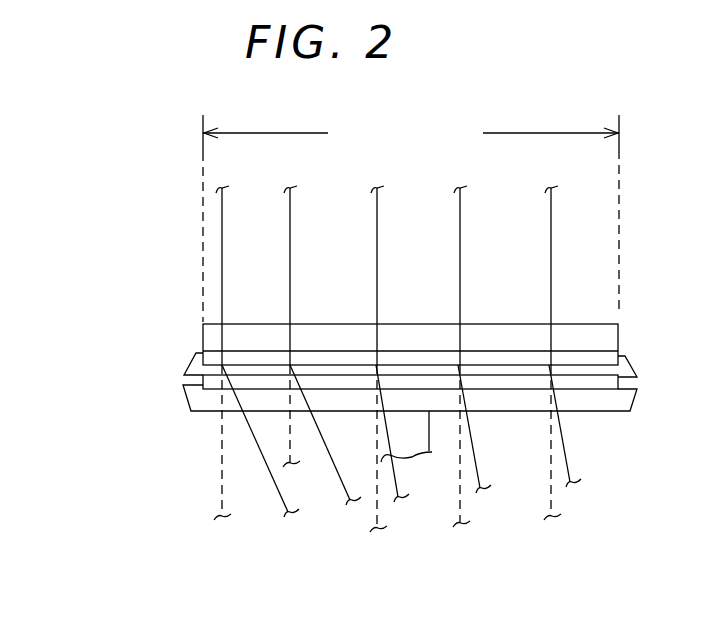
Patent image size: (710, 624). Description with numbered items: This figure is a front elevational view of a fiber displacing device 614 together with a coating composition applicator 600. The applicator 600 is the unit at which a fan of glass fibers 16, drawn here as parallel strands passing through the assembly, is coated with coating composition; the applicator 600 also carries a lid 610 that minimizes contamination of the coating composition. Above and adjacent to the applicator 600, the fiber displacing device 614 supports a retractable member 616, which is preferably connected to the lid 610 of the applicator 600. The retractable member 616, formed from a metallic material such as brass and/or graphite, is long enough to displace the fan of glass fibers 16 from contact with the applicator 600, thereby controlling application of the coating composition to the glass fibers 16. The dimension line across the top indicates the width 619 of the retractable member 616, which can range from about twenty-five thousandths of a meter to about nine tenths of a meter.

The glass fibers 16 is at (222, 233).
The width of the retractable member 619 is at (411, 218).
The fiber displacing device 614 is at (620, 341).
The retractable member 616 is at (196, 353).
The lid 610 is at (633, 369).
The applicator 600 is at (184, 400).